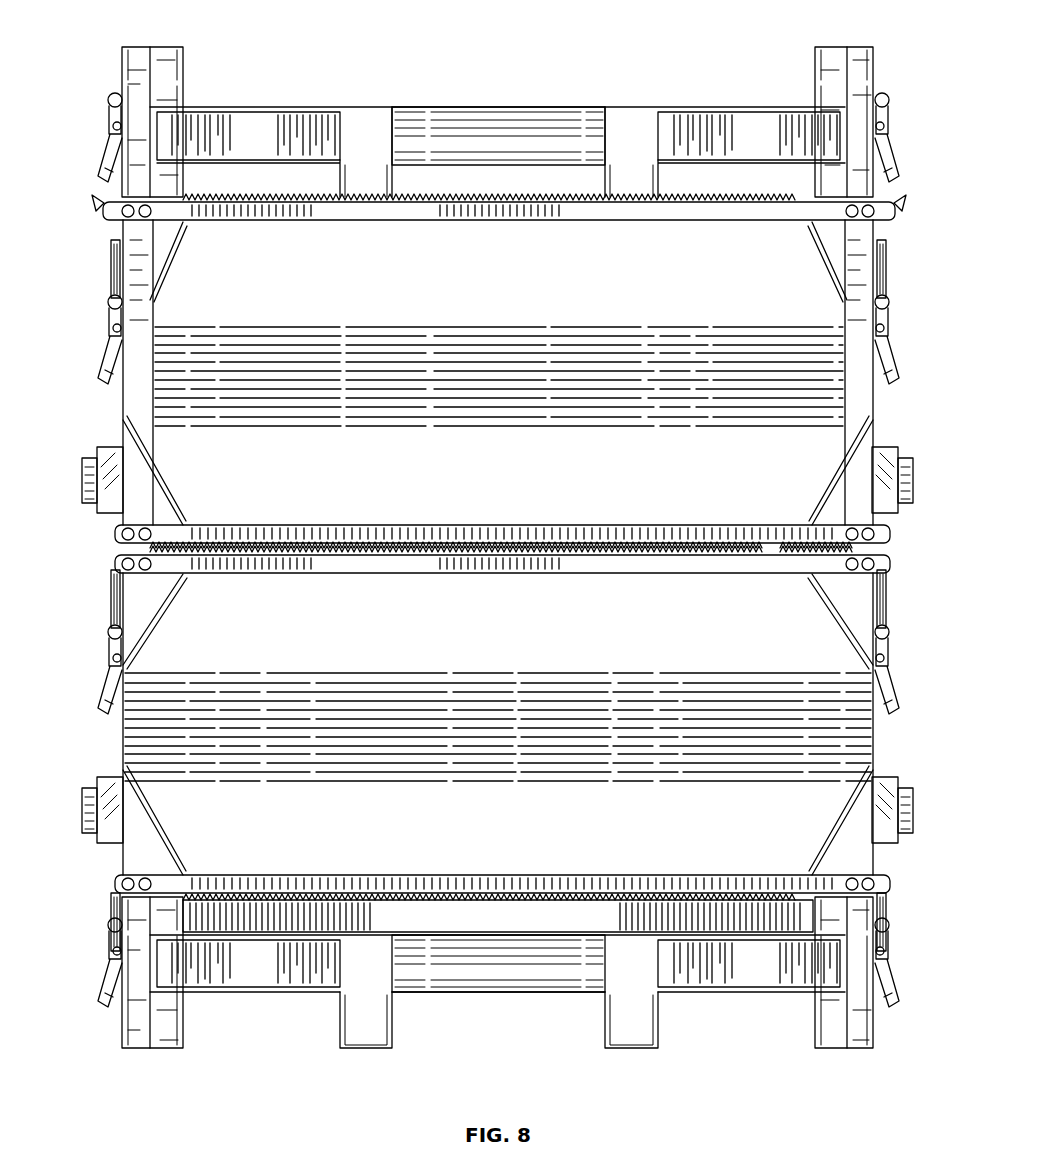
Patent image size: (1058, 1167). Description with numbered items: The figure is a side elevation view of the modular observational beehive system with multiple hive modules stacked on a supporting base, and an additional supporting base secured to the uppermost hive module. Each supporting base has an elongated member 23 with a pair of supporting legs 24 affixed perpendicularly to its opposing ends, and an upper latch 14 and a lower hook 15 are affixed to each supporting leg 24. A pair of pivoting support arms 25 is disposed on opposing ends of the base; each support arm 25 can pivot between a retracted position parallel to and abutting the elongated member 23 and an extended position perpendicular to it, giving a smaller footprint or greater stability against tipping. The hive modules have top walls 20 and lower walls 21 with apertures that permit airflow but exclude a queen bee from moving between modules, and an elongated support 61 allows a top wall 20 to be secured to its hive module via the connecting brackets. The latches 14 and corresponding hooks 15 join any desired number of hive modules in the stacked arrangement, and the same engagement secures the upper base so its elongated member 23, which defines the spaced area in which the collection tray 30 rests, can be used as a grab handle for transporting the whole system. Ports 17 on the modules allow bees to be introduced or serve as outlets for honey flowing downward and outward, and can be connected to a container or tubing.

The upper latch 14 is at (113, 198).
The lower hook 15 is at (107, 122).
The port 17 is at (80, 483).
The top wall 20 is at (620, 107).
The lower wall 21 is at (408, 525).
The elongated member 23 is at (425, 120).
The supporting leg 24 is at (168, 1052).
The pivoting support arm 25 is at (258, 122).
The collection tray 30 is at (615, 915).
The elongated support 61 is at (845, 610).